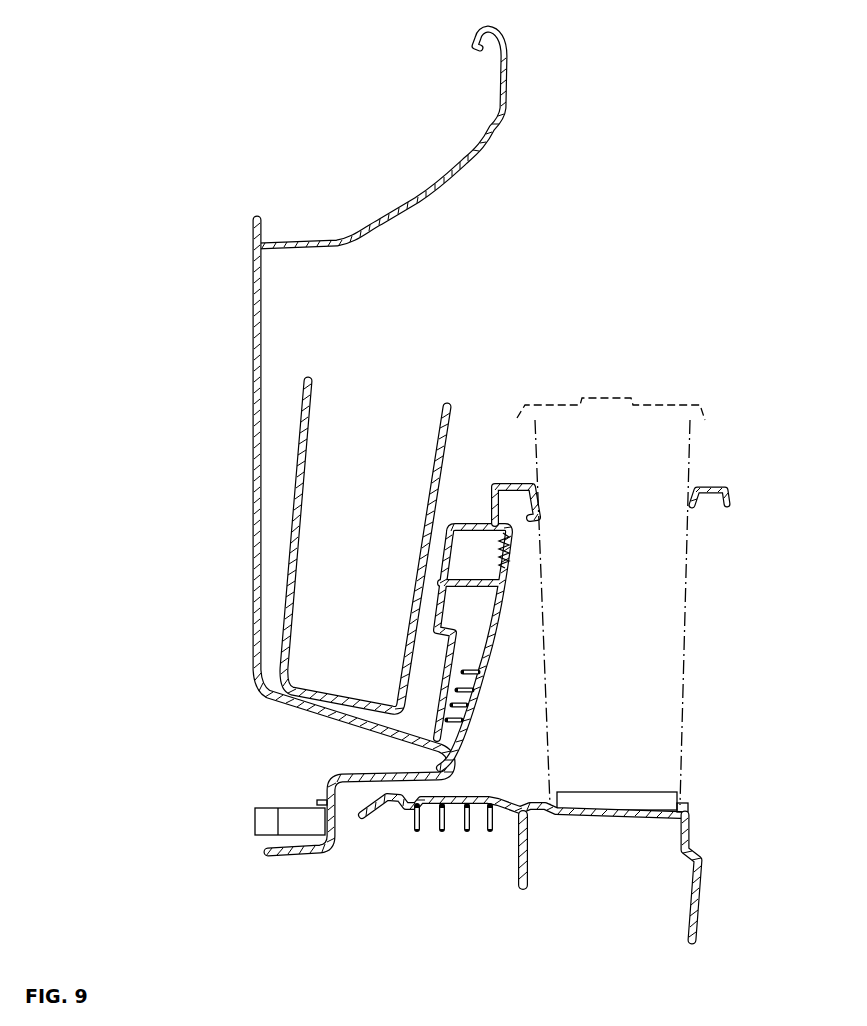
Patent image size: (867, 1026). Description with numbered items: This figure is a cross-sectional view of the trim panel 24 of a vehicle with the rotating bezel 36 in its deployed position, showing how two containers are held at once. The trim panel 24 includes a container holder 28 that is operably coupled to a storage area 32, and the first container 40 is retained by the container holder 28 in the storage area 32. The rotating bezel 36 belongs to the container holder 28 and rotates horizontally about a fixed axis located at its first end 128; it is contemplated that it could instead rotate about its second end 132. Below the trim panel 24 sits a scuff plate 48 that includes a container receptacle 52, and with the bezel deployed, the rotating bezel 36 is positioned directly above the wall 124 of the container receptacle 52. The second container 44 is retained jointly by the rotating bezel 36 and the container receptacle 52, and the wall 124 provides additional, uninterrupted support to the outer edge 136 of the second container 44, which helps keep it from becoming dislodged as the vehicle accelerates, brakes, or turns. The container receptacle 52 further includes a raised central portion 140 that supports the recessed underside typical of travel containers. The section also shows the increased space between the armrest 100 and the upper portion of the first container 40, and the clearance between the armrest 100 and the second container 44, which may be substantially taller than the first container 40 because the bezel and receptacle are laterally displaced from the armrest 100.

The armrest 100 is at (440, 161).
The trim panel 24 is at (248, 349).
The storage area 32 is at (273, 506).
The first container 40 is at (318, 570).
The container holder 28 is at (439, 654).
The first end 128 is at (495, 480).
The rotating bezel 36 is at (730, 487).
The second end 132 is at (707, 503).
The second container 44 is at (620, 618).
The outer edge 136 is at (690, 700).
The wall 124 is at (690, 805).
The raised central portion 140 is at (608, 798).
The container receptacle 52 is at (718, 912).
The scuff plate 48 is at (433, 820).